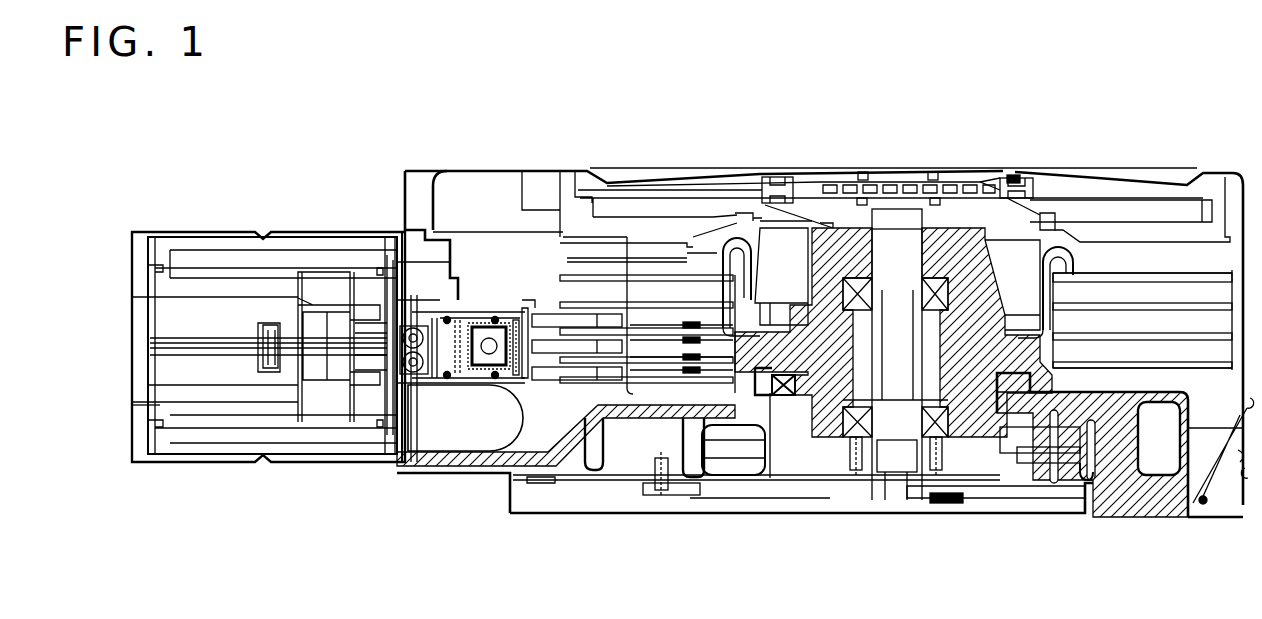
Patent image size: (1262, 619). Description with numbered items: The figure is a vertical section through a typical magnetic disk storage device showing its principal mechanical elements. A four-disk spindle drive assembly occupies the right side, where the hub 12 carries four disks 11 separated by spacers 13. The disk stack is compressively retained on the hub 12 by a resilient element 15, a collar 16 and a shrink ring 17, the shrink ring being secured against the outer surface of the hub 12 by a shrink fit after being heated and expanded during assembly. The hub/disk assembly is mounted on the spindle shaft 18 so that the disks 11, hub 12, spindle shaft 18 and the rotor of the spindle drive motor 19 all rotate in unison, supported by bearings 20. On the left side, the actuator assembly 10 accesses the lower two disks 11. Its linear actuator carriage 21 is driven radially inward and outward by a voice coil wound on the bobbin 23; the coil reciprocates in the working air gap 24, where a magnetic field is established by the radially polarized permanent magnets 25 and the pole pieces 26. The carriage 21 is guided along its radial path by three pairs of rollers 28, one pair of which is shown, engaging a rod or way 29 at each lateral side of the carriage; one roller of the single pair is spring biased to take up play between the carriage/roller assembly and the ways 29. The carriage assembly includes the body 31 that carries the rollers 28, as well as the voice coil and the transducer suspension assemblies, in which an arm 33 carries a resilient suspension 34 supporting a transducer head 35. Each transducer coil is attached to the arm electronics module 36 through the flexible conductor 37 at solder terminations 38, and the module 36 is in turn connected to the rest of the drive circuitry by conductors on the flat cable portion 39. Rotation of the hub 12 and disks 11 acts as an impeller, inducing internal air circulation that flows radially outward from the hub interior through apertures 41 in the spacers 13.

The actuator assembly 10 is at (301, 230).
The disks 11 is at (1187, 354).
The hub 12 is at (1078, 384).
The spacers 13 is at (1080, 298).
The resilient element 15 is at (1080, 262).
The collar 16 is at (1010, 303).
The shrink ring 17 is at (786, 300).
The spindle shaft 18 is at (892, 375).
The spindle drive motor 19 is at (752, 478).
The bearings 20 is at (900, 288).
The linear actuator carriage 21 is at (483, 312).
The bobbin 23 is at (320, 280).
The working air gap 24 is at (205, 262).
The permanent magnets 25 is at (248, 257).
The pole pieces 26 is at (132, 405).
The rollers 28 is at (425, 330).
The rod or way 29 is at (225, 335).
The body 31 is at (447, 318).
The arm 33 is at (543, 312).
The resilient suspension 34 is at (635, 312).
The transducer head 35 is at (688, 324).
The arm electronics module 36 is at (470, 376).
The flexible conductor 37 is at (498, 305).
The solder terminations 38 is at (497, 375).
The flat cable portion 39 is at (500, 470).
The apertures 41 is at (1075, 330).